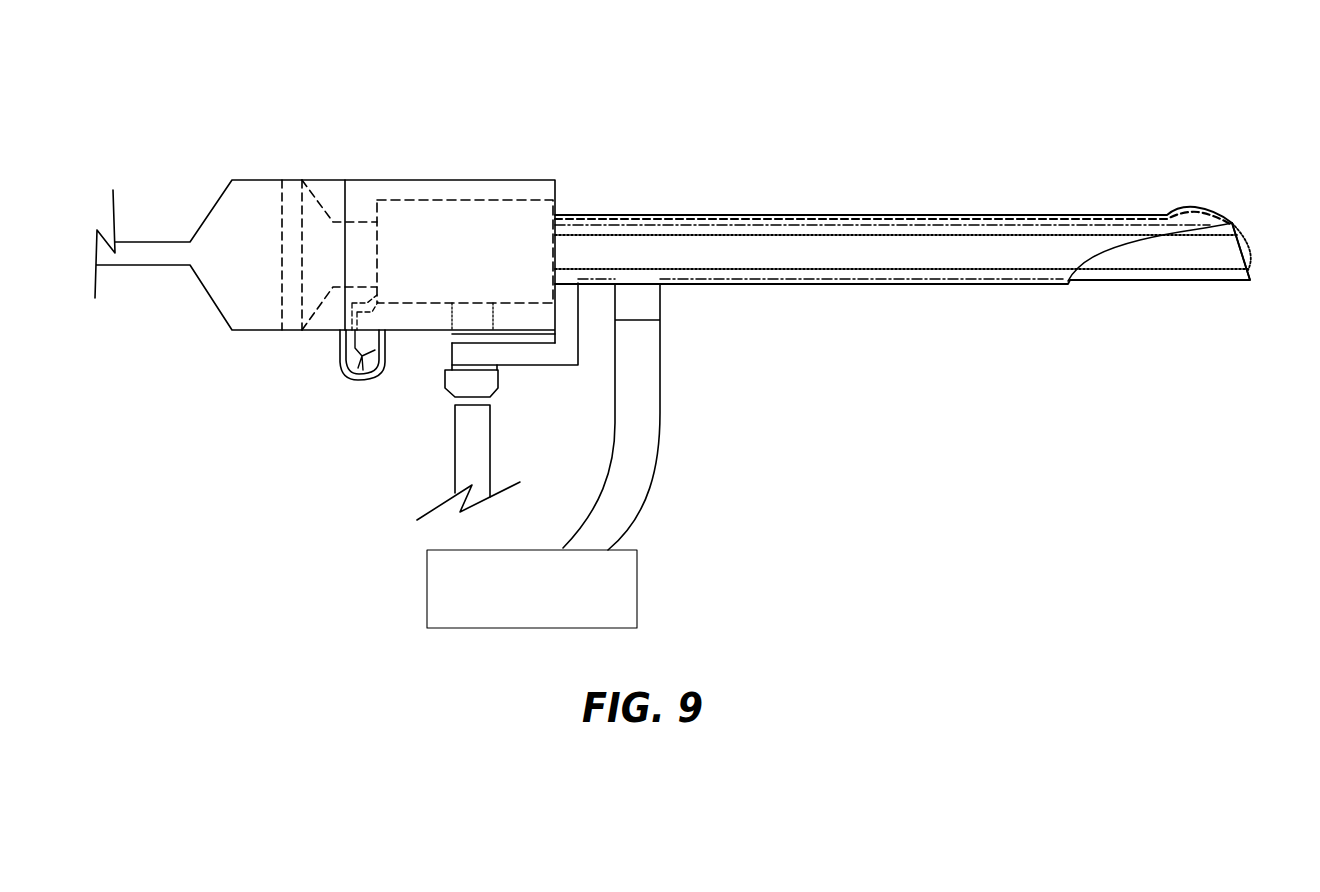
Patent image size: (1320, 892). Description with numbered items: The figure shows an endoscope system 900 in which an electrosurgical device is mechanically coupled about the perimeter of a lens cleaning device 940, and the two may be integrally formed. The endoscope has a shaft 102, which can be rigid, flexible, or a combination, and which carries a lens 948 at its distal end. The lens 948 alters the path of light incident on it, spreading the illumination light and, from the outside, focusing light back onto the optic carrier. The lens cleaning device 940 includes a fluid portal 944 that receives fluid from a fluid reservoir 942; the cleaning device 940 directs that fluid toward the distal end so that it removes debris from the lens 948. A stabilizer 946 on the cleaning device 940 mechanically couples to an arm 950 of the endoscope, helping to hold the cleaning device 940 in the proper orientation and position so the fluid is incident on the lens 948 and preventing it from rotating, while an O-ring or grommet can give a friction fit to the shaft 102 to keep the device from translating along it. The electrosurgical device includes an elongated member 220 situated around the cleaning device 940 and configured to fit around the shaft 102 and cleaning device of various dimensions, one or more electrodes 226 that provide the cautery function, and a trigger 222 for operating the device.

The endoscope system 900 is at (1104, 56).
The shaft 102 is at (713, 237).
The elongated member 220 is at (808, 215).
The electrodes 226 is at (868, 218).
The lens cleaning device 940 is at (978, 225).
The lens 948 is at (1245, 250).
The arm 950 is at (458, 337).
The stabilizer 946 is at (503, 353).
The fluid portal 944 is at (640, 322).
The fluid reservoir 942 is at (435, 565).
The trigger 222 is at (362, 384).